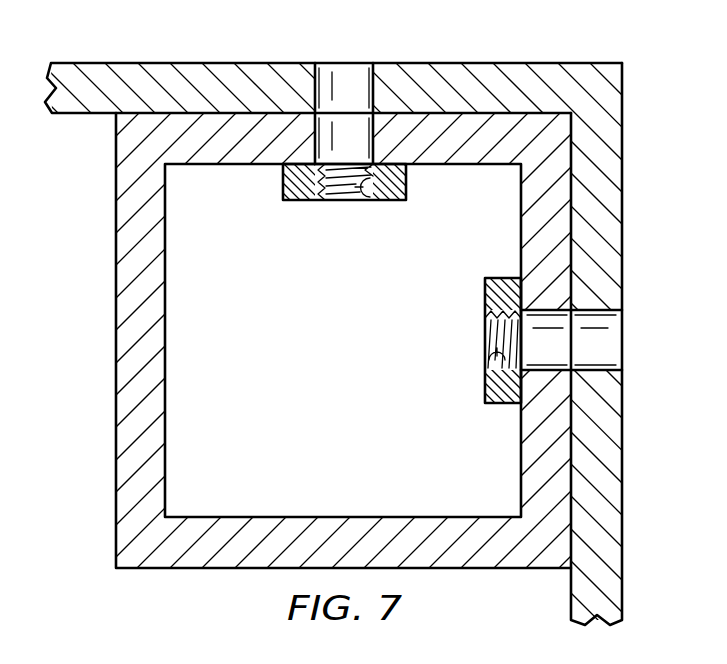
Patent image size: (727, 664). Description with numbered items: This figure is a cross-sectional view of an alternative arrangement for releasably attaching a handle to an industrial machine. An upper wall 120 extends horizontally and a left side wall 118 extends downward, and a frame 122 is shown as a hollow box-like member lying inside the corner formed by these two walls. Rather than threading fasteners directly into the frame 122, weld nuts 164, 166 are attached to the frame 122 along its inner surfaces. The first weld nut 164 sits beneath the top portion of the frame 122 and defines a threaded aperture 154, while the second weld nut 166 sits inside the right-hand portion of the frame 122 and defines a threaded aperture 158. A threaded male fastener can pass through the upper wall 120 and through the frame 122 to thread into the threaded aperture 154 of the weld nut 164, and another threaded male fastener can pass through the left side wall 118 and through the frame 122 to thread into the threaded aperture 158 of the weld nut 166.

The upper wall 120 is at (186, 62).
The left side wall 118 is at (623, 500).
The frame 122 is at (115, 380).
The threaded aperture 154 is at (355, 203).
The weld nut 164 is at (293, 203).
The threaded aperture 158 is at (493, 352).
The weld nut 166 is at (484, 389).